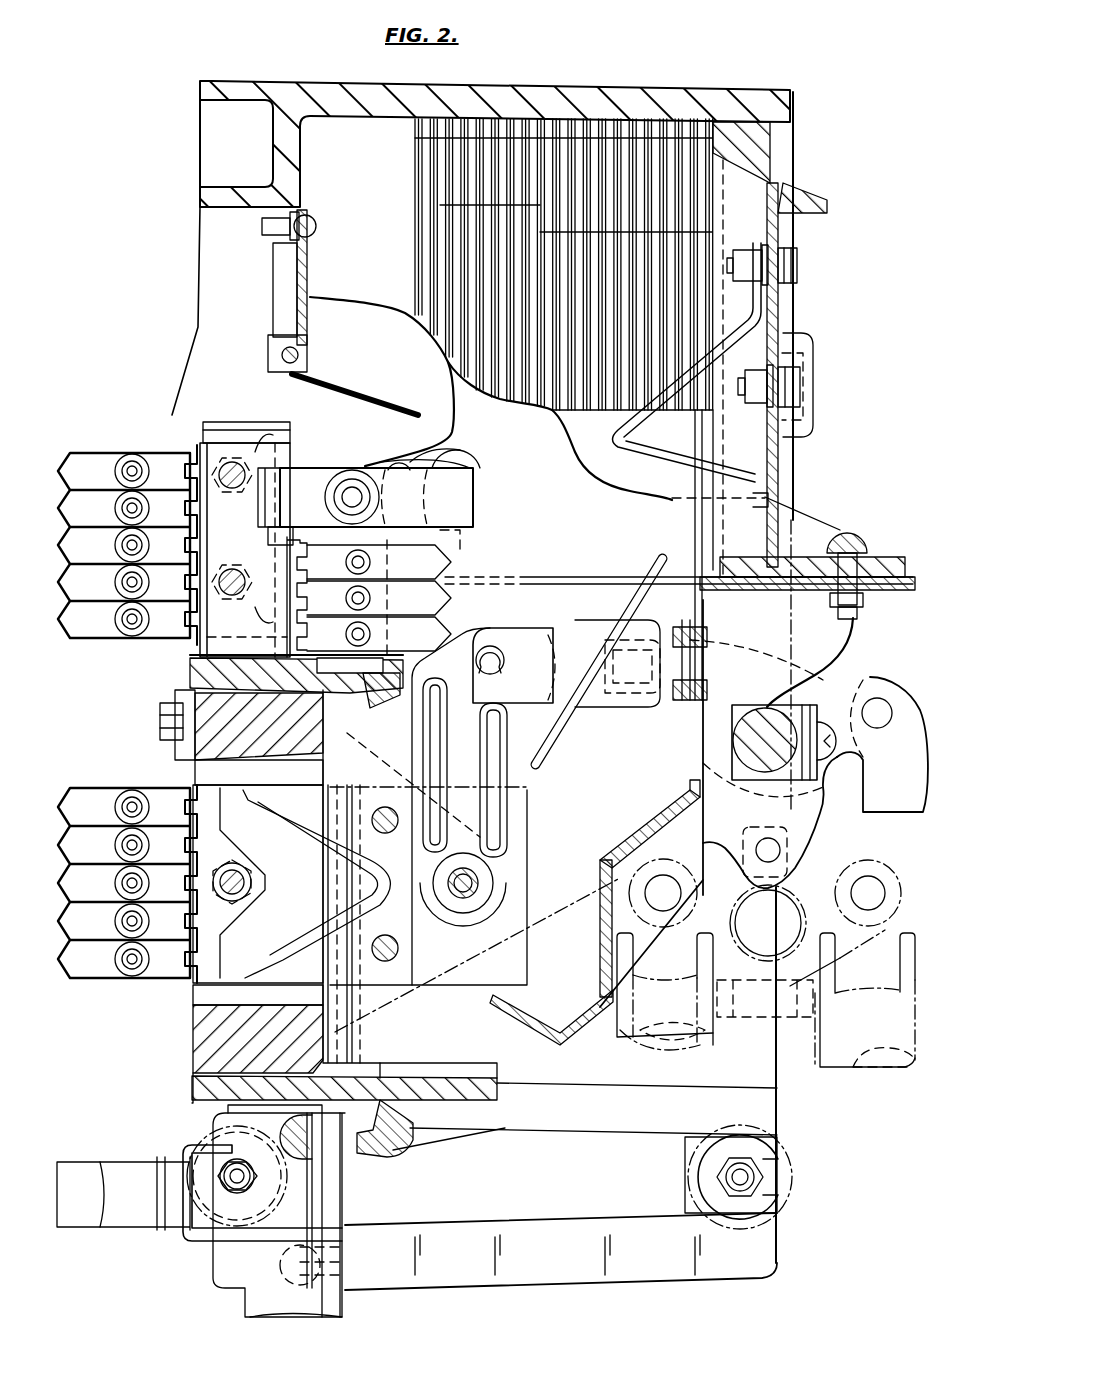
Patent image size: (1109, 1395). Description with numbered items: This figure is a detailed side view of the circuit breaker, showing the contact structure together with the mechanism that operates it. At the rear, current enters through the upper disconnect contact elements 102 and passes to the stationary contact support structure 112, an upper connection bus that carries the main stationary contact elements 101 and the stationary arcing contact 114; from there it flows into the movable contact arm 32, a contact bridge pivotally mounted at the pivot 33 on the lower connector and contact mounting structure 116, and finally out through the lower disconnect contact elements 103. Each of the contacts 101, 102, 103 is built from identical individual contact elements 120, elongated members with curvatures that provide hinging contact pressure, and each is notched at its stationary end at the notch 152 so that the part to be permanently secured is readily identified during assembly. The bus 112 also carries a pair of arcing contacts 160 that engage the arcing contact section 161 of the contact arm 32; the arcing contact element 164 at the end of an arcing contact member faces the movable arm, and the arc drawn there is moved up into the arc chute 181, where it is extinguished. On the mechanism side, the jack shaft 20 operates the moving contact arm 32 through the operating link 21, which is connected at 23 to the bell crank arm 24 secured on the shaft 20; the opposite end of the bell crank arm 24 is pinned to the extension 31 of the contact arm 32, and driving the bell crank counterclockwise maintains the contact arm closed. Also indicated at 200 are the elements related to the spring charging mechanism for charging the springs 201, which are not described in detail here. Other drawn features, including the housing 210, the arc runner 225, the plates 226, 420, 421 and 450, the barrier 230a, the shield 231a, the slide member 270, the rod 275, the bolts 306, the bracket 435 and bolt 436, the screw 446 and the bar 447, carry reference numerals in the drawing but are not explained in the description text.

The jack shaft 20 is at (732, 750).
The operating link 21 is at (917, 763).
The connection of link to bell crank arm 23 is at (885, 712).
The bell crank arm 24 is at (850, 670).
The extension of the contact arm 31 is at (680, 712).
The contact arm 32 is at (502, 614).
The pivot 33 is at (472, 905).
The main stationary contact elements 101 is at (460, 578).
The upper disconnect contact elements 102 is at (93, 643).
The lower disconnect contact elements 103 is at (92, 983).
The stationary contact support structure 112 is at (317, 523).
The stationary arcing contact 114 is at (387, 477).
The lower connector and contact mounting structure 116 is at (428, 987).
The contact element 120 is at (128, 442).
The notch 152 is at (200, 790).
The arcing contacts 160 is at (314, 477).
The arcing contact section 161 is at (418, 455).
The arcing contact element 164 is at (382, 503).
The arc chute 181 is at (595, 118).
The spring charging mechanism elements 200 is at (813, 883).
The springs 201 is at (667, 1060).
The housing 210 is at (339, 80).
The arc runner 225 is at (630, 443).
The arc plate 226 is at (618, 122).
The barrier 230a is at (352, 395).
The shield 231a is at (360, 317).
The slide member 270 is at (492, 863).
The spring rod 275 is at (507, 767).
The mounting bolt 306 is at (283, 1190).
The arc plate 420 is at (473, 133).
The end arc plate 421 is at (470, 123).
The bracket 435 is at (813, 357).
The bolt 436 is at (807, 397).
The screw 446 is at (847, 533).
The bar 447 is at (593, 577).
The arc plate 450 is at (560, 150).